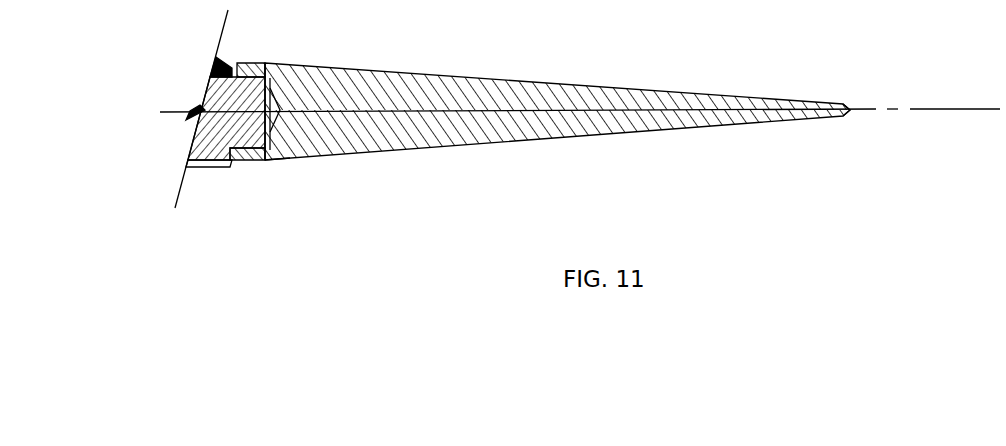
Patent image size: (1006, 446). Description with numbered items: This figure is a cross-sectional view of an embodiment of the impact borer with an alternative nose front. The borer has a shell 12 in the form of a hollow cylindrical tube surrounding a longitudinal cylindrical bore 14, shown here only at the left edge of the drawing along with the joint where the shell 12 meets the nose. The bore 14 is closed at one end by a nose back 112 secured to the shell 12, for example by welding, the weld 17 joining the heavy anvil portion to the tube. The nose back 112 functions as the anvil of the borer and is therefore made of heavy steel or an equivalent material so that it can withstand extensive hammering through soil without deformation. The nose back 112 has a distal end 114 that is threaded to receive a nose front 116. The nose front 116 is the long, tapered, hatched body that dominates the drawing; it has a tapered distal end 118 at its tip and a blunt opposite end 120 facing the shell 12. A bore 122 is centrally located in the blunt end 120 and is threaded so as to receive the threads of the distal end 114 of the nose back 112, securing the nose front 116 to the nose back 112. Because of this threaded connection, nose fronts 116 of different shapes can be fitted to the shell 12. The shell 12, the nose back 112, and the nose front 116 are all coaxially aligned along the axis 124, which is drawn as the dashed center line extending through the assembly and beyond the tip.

The shell 12 is at (207, 168).
The longitudinal cylindrical bore 14 is at (203, 164).
The weld 17 is at (218, 58).
The nose back 112 is at (250, 165).
The distal end 114 is at (268, 165).
The nose front 116 is at (740, 93).
The tapered distal end 118 is at (848, 104).
The blunt opposite end 120 is at (246, 76).
The bore 122 is at (269, 75).
The axis 124 is at (929, 109).